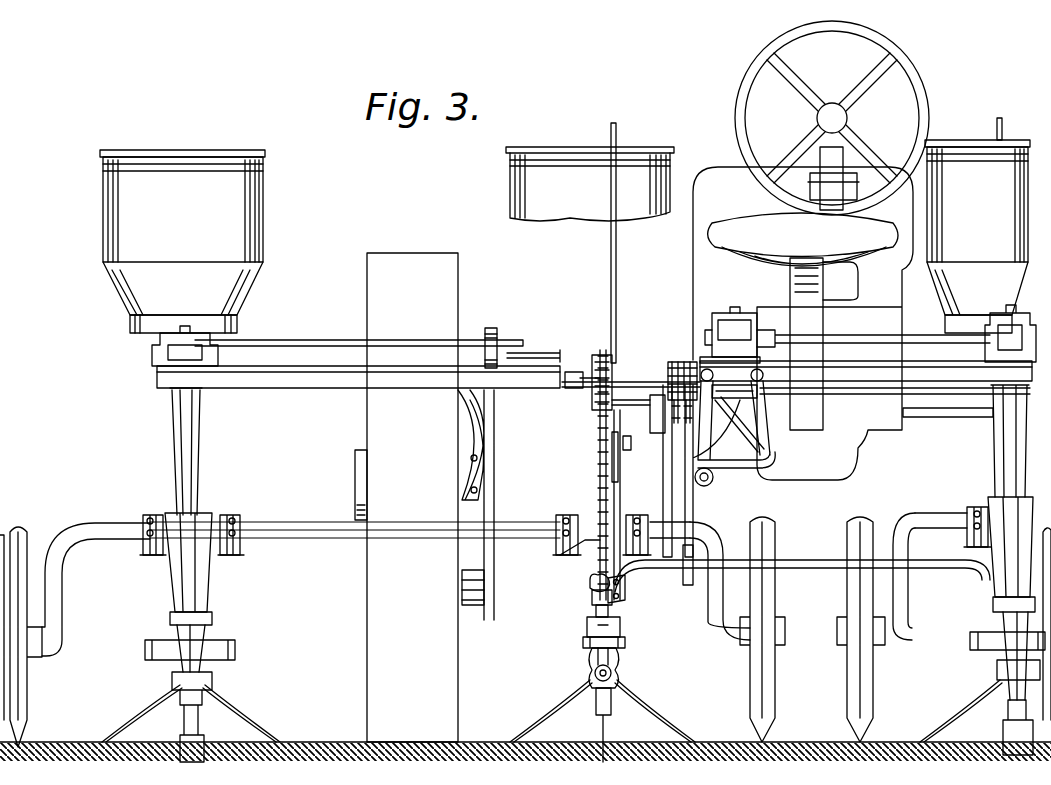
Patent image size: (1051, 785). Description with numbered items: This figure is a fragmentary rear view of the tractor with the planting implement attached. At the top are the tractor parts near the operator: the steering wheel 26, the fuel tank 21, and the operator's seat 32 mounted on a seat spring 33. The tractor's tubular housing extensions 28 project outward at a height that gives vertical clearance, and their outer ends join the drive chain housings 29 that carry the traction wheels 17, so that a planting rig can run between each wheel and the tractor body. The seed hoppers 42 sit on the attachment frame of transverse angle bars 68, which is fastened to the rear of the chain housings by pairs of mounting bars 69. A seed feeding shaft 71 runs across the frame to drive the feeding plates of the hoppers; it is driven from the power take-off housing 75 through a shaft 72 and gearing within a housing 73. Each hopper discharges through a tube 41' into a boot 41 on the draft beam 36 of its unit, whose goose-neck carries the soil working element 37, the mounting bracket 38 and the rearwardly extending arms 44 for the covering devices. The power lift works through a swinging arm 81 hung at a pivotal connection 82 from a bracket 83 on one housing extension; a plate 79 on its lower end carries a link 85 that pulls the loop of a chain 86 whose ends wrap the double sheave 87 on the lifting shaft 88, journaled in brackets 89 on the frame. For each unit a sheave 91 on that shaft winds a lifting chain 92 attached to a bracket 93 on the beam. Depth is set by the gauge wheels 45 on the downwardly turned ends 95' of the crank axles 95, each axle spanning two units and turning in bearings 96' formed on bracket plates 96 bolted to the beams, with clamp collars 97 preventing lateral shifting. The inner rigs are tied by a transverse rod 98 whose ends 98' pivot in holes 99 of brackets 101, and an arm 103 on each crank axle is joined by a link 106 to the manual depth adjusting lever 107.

The traction wheels 17 is at (362, 585).
The fuel tank 21 is at (716, 170).
The steering wheel 26 is at (740, 110).
The tubular housing extensions 28 is at (540, 352).
The drive chain housings 29 is at (472, 606).
The operator's seat 32 is at (745, 222).
The seat spring 33 is at (795, 280).
The draft beam 36 is at (614, 492).
The soil working element 37 is at (143, 720).
The mounting bracket 38 is at (587, 630).
The boot 41 is at (584, 629).
The discharge tubes 41' is at (582, 450).
The seed hopper 42 is at (110, 245).
The arms 44 is at (150, 642).
The gauge wheels 45 is at (27, 545).
The attachment frame angle bars 68 is at (296, 385).
The mounting bars 69 is at (490, 328).
The seed feeding shaft 71 is at (312, 341).
The drive shaft 72 is at (738, 455).
The gear housing 73 is at (720, 313).
The power take-off housing 75 is at (710, 482).
The plate 79 is at (690, 585).
The swinging arm 81 is at (664, 452).
The pivotal connection 82 is at (655, 410).
The bracket 83 is at (636, 437).
The link 85 is at (694, 524).
The chain 86 is at (674, 362).
The double sheave 87 is at (688, 362).
The lifting shaft 88 is at (668, 380).
The brackets 89 is at (572, 386).
The sheave 91 is at (602, 355).
The flexible lifting member 92 is at (600, 442).
The bracket 93 is at (596, 610).
The crank axle 95 is at (558, 531).
The downwardly turned ends 95' is at (494, 584).
The bracket plates 96 is at (565, 565).
The bearings 96' is at (546, 522).
The clamp collars 97 is at (153, 518).
The transverse rod 98 is at (802, 563).
The rod ends 98' is at (632, 589).
The holes 99 is at (590, 582).
The brackets 101 is at (592, 595).
The arm 103 is at (560, 548).
The link 106 is at (598, 458).
The depth adjusting lever 107 is at (611, 235).